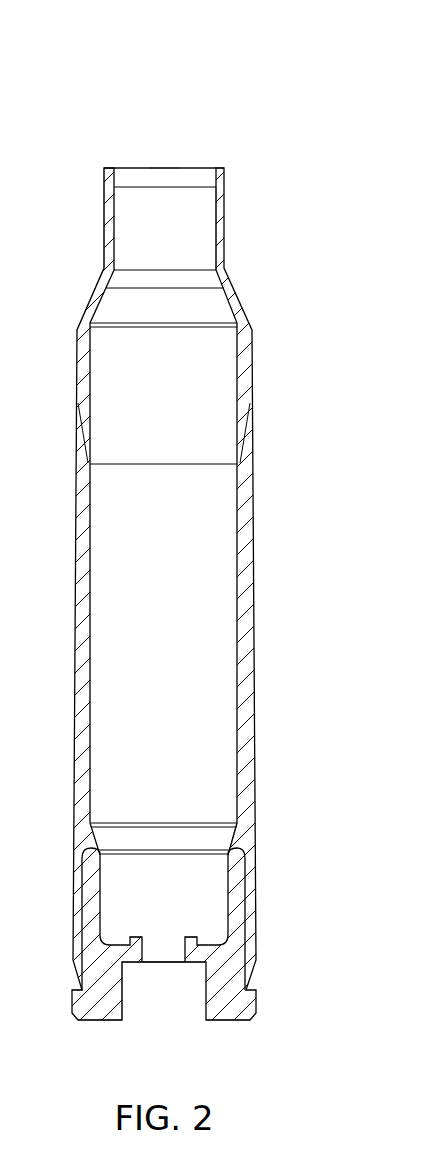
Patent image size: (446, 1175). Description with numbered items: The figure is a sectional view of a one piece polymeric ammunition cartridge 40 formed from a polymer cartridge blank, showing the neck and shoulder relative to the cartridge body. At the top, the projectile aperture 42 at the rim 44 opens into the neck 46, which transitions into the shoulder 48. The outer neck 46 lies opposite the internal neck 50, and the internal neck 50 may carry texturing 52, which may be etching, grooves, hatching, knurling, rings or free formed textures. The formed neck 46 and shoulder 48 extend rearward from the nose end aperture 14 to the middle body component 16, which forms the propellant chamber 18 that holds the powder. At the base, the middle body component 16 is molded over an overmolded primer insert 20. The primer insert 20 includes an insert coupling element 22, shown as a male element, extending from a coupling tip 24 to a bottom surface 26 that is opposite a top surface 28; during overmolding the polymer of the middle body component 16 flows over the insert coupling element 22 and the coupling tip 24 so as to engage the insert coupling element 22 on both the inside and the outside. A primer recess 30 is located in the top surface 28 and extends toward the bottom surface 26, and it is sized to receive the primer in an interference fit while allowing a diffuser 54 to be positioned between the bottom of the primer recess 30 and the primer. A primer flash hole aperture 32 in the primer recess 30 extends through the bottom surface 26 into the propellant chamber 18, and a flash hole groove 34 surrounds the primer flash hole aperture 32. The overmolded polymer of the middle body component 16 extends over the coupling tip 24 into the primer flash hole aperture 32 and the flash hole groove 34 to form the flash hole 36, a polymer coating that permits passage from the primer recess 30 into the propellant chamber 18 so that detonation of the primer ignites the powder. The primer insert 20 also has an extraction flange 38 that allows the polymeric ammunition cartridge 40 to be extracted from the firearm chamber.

The polymeric ammunition cartridge 40 is at (249, 67).
The nose end aperture 14 is at (201, 167).
The projectile aperture 42 is at (164, 167).
The rim 44 is at (109, 167).
The neck 46 is at (104, 210).
The shoulder 48 is at (92, 300).
The internal neck 50 is at (214, 238).
The texturing 52 is at (150, 244).
The middle body component 16 is at (73, 557).
The propellant chamber 18 is at (152, 603).
The coupling tip 24 is at (250, 830).
The insert coupling element 22 is at (244, 920).
The primer flash hole aperture 32 is at (143, 935).
The flash hole 36 is at (183, 935).
The diffuser 54 is at (172, 964).
The extraction flange 38 is at (73, 990).
The primer insert 20 is at (69, 1021).
The top surface 28 is at (93, 1021).
The primer recess 30 is at (125, 993).
The flash hole groove 34 is at (148, 964).
The bottom surface 26 is at (251, 1022).